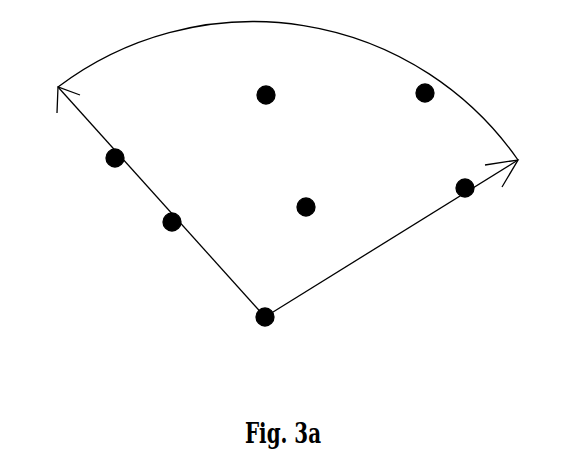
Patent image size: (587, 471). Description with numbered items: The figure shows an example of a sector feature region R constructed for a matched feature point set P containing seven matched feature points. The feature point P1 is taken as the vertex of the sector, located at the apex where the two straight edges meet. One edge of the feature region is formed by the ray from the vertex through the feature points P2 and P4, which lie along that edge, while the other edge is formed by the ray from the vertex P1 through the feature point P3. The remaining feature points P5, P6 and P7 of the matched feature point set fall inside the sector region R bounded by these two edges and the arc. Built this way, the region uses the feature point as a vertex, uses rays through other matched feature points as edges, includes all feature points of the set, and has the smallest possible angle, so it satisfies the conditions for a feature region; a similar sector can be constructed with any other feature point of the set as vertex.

The feature point P1 is at (253, 329).
The feature point P2 is at (156, 241).
The feature point P3 is at (485, 203).
The feature point P4 is at (103, 177).
The feature point P5 is at (448, 95).
The feature point P6 is at (287, 204).
The feature point P7 is at (240, 95).